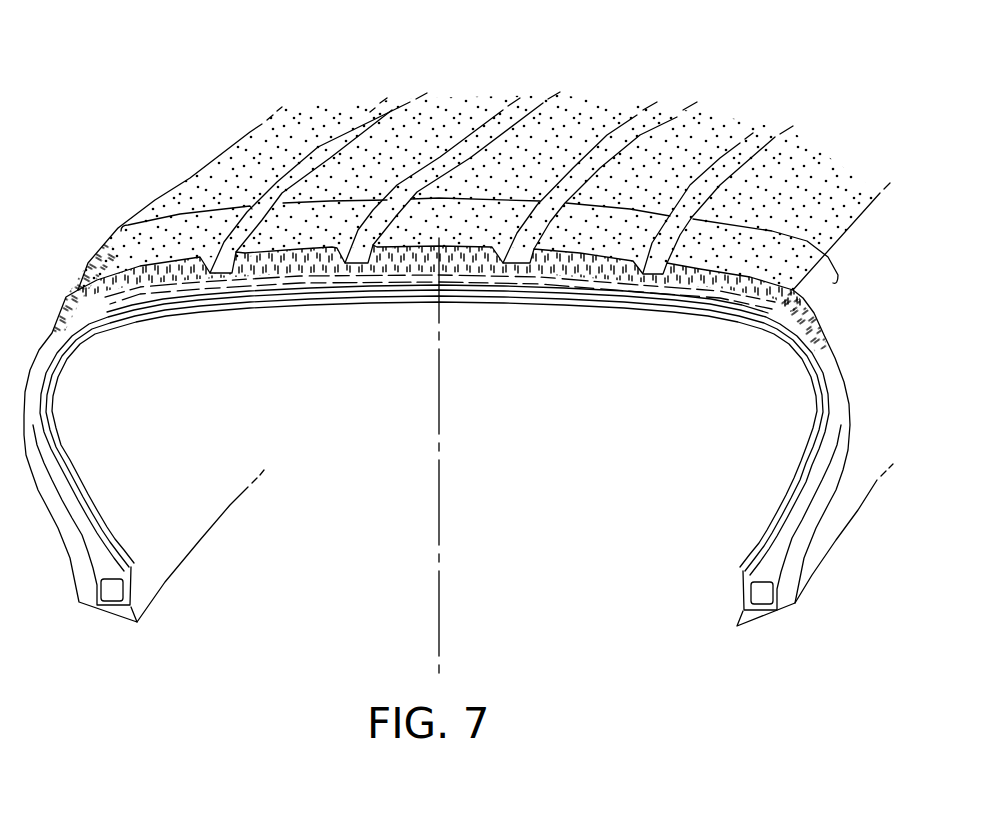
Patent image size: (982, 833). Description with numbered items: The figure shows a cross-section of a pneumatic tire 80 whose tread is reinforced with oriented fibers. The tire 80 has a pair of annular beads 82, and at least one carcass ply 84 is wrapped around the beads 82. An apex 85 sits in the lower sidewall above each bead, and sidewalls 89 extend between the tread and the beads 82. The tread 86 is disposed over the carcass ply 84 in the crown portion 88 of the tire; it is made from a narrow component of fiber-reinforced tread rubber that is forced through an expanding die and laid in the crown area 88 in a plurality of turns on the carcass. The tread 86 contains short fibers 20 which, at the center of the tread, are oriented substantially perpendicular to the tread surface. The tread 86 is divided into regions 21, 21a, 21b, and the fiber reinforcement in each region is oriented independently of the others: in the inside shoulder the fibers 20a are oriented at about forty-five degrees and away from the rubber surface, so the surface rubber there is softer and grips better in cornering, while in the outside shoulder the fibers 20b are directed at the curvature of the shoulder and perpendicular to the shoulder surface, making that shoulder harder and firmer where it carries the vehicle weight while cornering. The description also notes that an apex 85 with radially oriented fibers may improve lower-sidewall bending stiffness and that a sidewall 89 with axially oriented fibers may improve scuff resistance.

The short fibers 20 is at (390, 263).
The fibers 20a is at (98, 285).
The fibers 20b is at (780, 290).
The region 21 is at (474, 197).
The region 21a is at (771, 230).
The region 21b is at (186, 213).
The pneumatic tire 80 is at (163, 672).
The annular beads 82 is at (113, 593).
The carcass ply 84 is at (812, 380).
The apex 85 is at (100, 557).
The tread 86 is at (388, 175).
The crown portion 88 is at (222, 130).
The sidewalls 89 is at (30, 402).